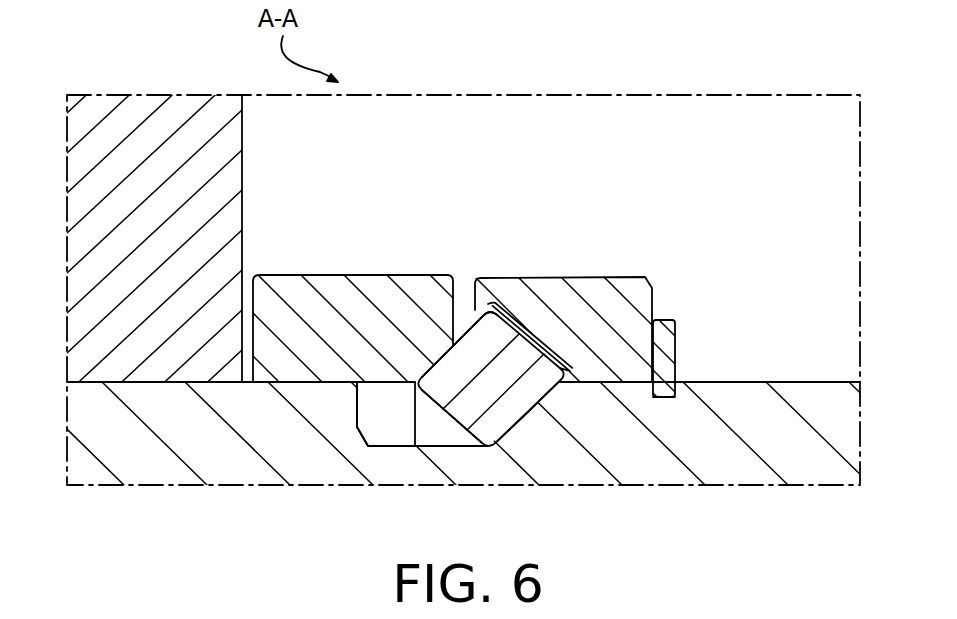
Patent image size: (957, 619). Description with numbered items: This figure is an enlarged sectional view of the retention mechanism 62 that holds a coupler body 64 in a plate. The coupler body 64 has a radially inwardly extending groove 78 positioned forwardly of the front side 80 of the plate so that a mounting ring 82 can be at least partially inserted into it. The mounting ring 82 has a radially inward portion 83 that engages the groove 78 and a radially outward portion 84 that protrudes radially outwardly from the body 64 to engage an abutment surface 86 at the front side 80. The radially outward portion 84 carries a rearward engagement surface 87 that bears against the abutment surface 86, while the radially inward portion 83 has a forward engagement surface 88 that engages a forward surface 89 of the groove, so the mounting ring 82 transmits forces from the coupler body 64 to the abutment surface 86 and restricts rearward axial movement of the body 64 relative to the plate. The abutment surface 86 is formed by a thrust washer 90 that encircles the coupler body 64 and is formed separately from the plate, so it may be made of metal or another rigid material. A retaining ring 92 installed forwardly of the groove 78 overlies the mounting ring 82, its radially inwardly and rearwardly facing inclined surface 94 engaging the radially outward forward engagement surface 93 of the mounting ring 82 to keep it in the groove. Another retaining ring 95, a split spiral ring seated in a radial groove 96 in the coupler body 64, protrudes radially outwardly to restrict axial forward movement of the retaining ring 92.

The retention mechanism 62 is at (527, 187).
The coupler body 64 is at (805, 395).
The radially inwardly extending groove 78 is at (456, 446).
The front side of the plate 80 is at (243, 160).
The mounting ring 82 is at (475, 362).
The radially inward portion 83 is at (482, 427).
The radially outward portion 84 is at (497, 332).
The abutment surface 86 is at (373, 297).
The rearward engagement surface 87 is at (445, 342).
The forward engagement surface 88 is at (558, 400).
The forward surface of the groove 89 is at (518, 408).
The thrust washer 90 is at (292, 295).
The retaining ring 92 is at (640, 303).
The radially outward forward engagement surface 93 is at (512, 314).
The inclined surface 94 is at (540, 368).
The retaining ring 95 is at (668, 340).
The radial groove 96 is at (668, 400).